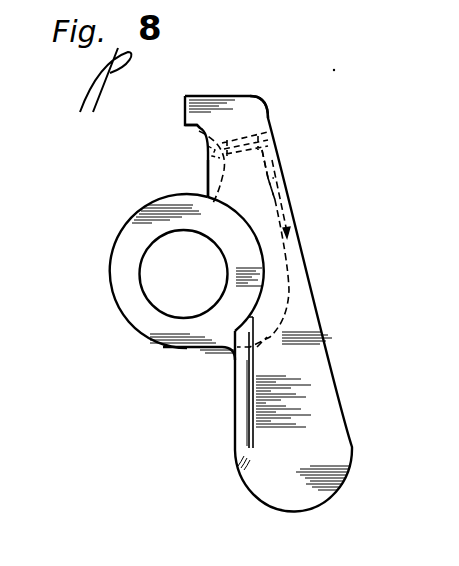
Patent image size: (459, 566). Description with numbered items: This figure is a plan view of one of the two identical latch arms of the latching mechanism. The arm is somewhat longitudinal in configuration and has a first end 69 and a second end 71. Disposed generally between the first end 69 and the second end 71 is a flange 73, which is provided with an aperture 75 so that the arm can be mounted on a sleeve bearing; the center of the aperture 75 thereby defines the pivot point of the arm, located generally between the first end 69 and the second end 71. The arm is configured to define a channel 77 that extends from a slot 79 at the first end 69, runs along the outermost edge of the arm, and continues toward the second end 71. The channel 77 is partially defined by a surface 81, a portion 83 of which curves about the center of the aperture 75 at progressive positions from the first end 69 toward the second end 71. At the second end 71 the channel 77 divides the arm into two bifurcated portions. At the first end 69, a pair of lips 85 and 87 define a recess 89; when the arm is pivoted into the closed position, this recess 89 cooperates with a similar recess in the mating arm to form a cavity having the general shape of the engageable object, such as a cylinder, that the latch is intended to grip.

The first end 69 is at (280, 118).
The second end 71 is at (228, 461).
The flange 73 is at (142, 232).
The aperture 75 is at (160, 294).
The channel 77 is at (290, 196).
The slot 79 is at (270, 136).
The surface 81 is at (286, 171).
The curved portion of surface 83 is at (284, 270).
The lip 85 is at (195, 130).
The lip 87 is at (207, 152).
The recess 89 is at (199, 174).